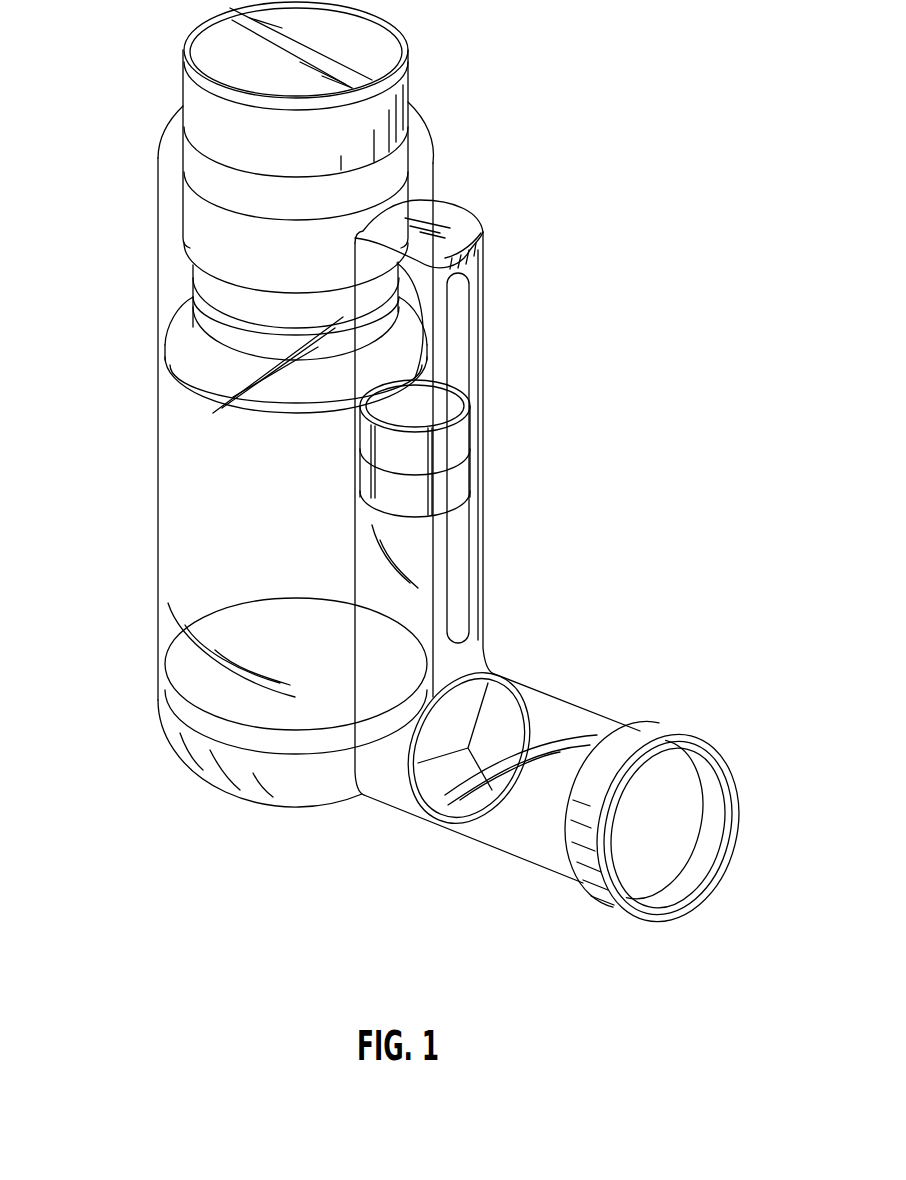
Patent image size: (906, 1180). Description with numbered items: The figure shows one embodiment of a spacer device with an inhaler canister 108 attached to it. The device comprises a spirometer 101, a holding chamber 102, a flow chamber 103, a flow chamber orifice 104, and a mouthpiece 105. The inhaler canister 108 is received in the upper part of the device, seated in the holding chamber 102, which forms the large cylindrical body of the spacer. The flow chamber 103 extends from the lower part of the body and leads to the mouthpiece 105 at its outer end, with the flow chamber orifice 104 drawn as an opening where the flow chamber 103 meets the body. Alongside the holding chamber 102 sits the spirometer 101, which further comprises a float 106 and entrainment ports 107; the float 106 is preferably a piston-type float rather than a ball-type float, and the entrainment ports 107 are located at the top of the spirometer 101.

The spirometer 101 is at (455, 298).
The holding chamber 102 is at (182, 538).
The flow chamber 103 is at (507, 828).
The flow chamber orifice 104 is at (495, 725).
The mouthpiece 105 is at (678, 738).
The float 106 is at (460, 437).
The entrainment ports 107 is at (456, 238).
The inhaler canister 108 is at (197, 228).